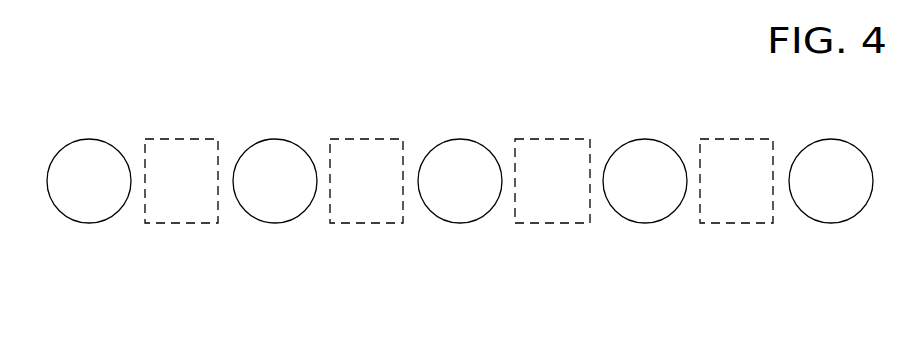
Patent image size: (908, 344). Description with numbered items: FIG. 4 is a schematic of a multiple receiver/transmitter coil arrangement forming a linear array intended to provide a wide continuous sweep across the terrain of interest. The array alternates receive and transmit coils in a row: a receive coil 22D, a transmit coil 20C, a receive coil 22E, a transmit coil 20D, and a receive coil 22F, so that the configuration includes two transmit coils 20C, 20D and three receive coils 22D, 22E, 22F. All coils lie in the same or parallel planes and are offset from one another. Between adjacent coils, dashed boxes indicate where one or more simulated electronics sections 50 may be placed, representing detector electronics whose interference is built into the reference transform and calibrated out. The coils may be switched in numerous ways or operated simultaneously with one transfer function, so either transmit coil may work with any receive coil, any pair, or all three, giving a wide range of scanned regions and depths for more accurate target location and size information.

The simulated electronics section 50 is at (180, 157).
The receive coil 22D is at (88, 223).
The transmit coil 20C is at (273, 223).
The receive coil 22E is at (455, 223).
The transmit coil 20D is at (643, 223).
The receive coil 22F is at (828, 223).